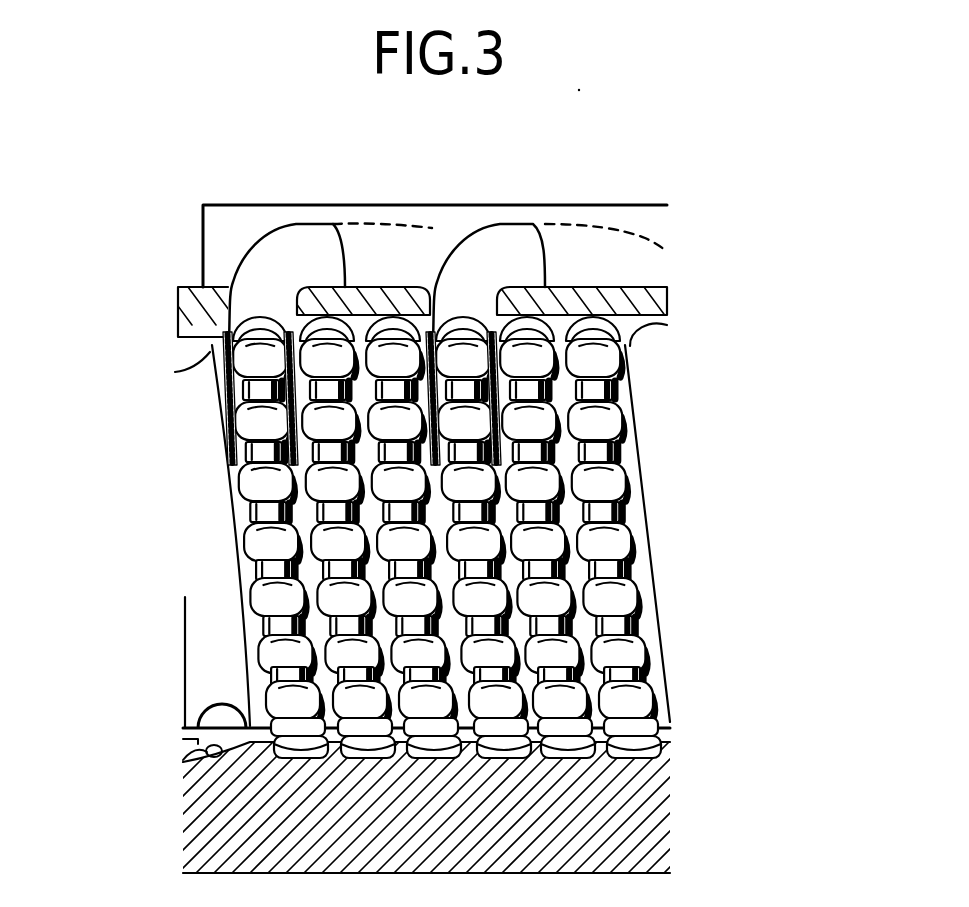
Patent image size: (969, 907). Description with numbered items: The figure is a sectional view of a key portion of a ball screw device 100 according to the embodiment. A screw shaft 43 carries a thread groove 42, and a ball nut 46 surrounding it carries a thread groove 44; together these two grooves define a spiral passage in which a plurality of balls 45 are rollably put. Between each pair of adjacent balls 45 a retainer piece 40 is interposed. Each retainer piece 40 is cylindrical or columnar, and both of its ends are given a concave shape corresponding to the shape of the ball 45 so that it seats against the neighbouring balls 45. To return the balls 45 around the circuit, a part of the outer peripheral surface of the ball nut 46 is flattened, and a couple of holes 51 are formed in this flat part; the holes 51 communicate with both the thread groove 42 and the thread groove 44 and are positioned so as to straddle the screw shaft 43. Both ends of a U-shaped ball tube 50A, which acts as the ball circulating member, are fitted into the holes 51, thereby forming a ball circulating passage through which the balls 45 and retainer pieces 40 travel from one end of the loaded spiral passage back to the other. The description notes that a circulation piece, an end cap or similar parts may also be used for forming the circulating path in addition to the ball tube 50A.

The ball screw device 100 is at (701, 229).
The U-shaped ball tube 50A is at (523, 224).
The holes 51 is at (448, 250).
The balls 45 is at (247, 546).
The retainer pieces 40 is at (238, 508).
The screw shaft 43 is at (186, 642).
The thread groove 42 is at (203, 698).
The thread groove 44 is at (205, 754).
The ball nut 46 is at (160, 820).